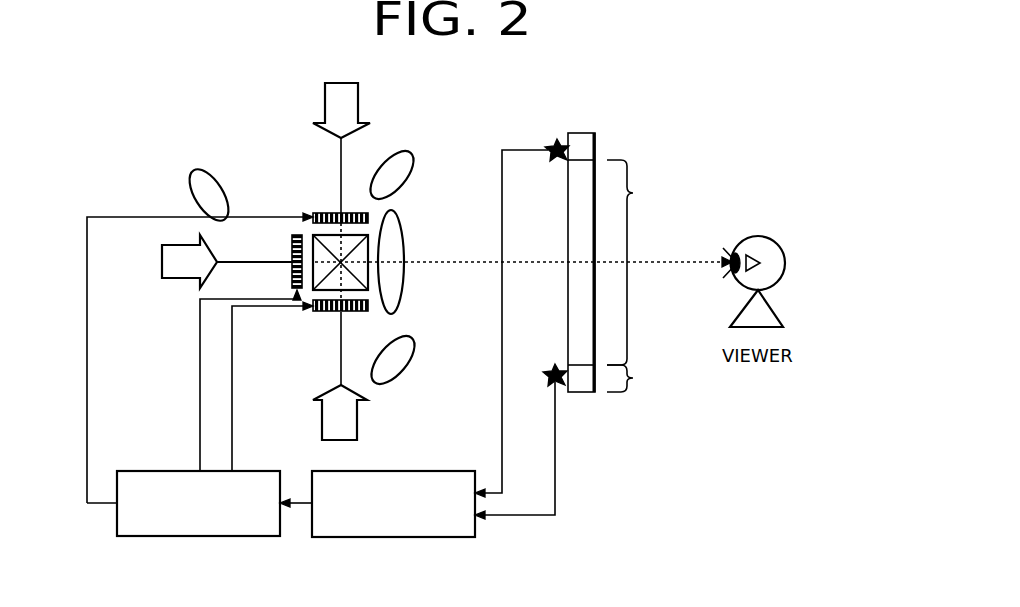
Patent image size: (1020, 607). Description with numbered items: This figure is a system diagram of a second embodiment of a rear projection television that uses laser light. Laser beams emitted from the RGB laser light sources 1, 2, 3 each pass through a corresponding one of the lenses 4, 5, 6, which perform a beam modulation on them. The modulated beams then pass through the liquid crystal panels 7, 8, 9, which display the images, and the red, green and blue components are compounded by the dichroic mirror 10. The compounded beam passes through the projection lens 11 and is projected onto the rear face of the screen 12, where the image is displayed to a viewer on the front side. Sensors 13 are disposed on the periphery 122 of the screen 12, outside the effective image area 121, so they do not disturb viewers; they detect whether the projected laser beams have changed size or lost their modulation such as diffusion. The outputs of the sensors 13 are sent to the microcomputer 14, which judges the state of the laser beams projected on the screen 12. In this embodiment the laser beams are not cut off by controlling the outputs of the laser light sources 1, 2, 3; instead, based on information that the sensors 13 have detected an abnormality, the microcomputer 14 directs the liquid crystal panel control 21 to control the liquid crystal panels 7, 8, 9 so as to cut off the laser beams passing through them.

The laser light source 1 is at (163, 262).
The laser light source 2 is at (325, 105).
The laser light source 3 is at (358, 415).
The lens 4 is at (194, 174).
The lens 5 is at (409, 153).
The lens 6 is at (404, 362).
The liquid crystal panel 7 is at (275, 265).
The liquid crystal panel 8 is at (328, 213).
The liquid crystal panel 9 is at (326, 312).
The dichroic mirror 10 is at (358, 254).
The projection lens 11 is at (417, 262).
The screen 12 is at (581, 380).
The sensors 13 is at (556, 146).
The microcomputer 14 is at (452, 471).
The liquid crystal panel control 21 is at (160, 471).
The effective image area 121 is at (650, 262).
The periphery 122 is at (648, 378).